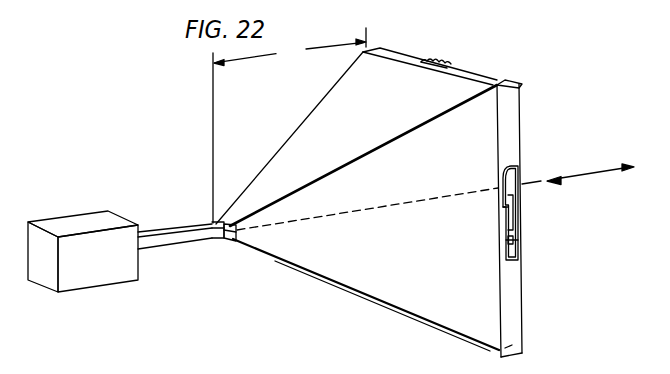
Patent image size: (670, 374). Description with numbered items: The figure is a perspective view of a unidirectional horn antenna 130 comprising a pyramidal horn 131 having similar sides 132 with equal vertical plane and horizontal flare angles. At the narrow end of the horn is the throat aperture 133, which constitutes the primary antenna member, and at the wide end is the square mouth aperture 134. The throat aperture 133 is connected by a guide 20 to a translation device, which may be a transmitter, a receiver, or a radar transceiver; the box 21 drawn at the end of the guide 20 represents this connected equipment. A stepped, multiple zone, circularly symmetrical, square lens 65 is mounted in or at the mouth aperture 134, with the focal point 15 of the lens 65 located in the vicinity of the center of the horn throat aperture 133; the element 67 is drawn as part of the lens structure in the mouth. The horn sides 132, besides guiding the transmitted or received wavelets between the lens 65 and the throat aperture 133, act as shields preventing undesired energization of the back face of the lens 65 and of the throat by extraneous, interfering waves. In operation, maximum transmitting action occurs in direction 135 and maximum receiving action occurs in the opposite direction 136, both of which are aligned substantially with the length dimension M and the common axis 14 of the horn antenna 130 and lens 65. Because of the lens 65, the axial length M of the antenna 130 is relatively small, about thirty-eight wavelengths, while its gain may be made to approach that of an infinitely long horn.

The axial length M is at (289, 125).
The common axis 14 is at (418, 200).
The focal point 15 is at (208, 230).
The guide 20 is at (180, 243).
The light source housing 21 is at (94, 221).
The lens 65 is at (513, 296).
The lens holder 67 is at (510, 234).
The unidirectional horn antenna 130 is at (489, 342).
The pyramidal horn 131 is at (256, 165).
The sides 132 is at (305, 137).
The throat aperture 133 is at (241, 241).
The square mouth aperture 134 is at (498, 108).
The direction of maximum transmitting action 135 is at (610, 171).
The direction of maximum receiving action 136 is at (571, 177).